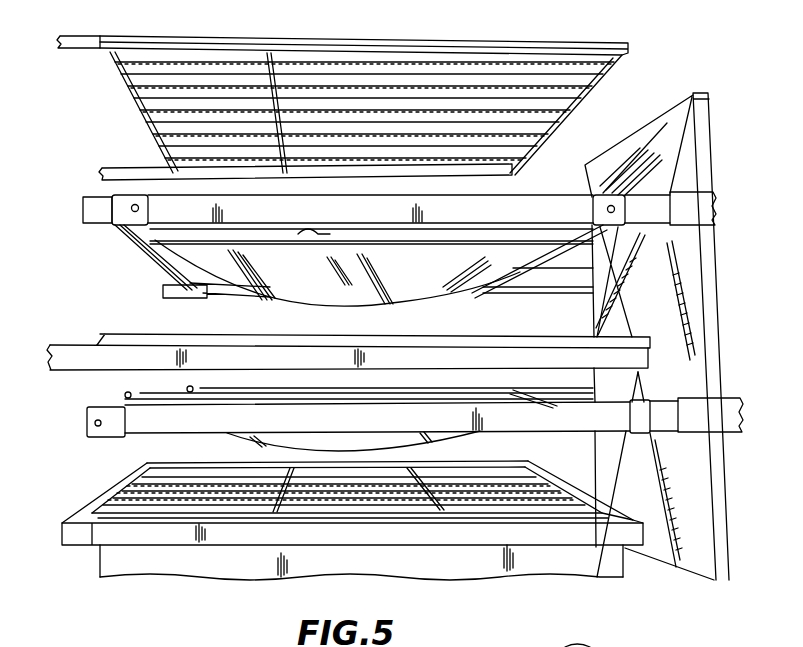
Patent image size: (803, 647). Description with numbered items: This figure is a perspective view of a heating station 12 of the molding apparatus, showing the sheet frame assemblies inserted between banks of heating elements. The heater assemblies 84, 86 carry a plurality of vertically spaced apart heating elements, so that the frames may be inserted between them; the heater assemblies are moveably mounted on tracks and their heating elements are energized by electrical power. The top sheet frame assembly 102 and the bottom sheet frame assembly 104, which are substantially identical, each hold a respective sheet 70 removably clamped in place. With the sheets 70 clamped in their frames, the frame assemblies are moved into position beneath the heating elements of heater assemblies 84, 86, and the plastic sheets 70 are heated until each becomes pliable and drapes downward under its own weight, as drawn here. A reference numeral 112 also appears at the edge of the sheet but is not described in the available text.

The heating station 12 is at (658, 46).
The heater assembly 84 is at (622, 54).
The heater assembly 86 is at (97, 503).
The sheet 70 is at (393, 296).
The top sheet frame assembly 102 is at (96, 207).
The bottom sheet frame assembly 104 is at (88, 418).
The element of adjacent figure (clipped) 112 is at (532, 640).